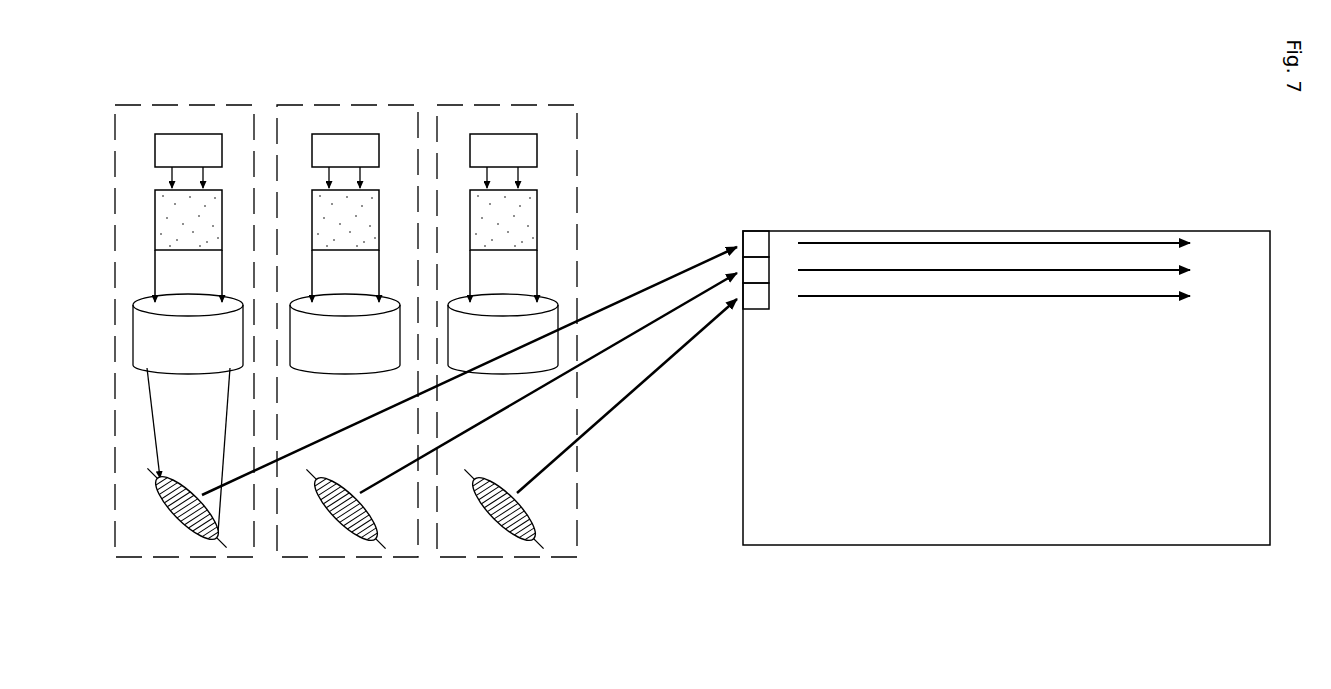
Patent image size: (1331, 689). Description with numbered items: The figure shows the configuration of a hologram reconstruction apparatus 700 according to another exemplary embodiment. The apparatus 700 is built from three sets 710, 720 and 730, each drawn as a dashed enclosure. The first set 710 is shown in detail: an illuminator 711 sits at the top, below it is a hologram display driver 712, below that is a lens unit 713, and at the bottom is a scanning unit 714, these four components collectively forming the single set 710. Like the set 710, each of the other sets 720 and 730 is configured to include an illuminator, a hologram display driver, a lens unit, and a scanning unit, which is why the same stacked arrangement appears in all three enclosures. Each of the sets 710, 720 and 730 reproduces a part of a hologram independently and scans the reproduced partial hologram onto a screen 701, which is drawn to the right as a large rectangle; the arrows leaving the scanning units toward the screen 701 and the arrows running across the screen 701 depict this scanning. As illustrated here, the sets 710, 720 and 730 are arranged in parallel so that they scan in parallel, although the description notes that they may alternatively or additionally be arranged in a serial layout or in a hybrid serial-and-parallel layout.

The hologram reconstruction apparatus 700 is at (338, 102).
The screen 701 is at (908, 231).
The set 710 is at (183, 558).
The illuminator 711 is at (155, 146).
The hologram display driver 712 is at (155, 219).
The lens unit 713 is at (133, 331).
The scanning unit 714 is at (160, 497).
The set 720 is at (342, 558).
The set 730 is at (503, 558).